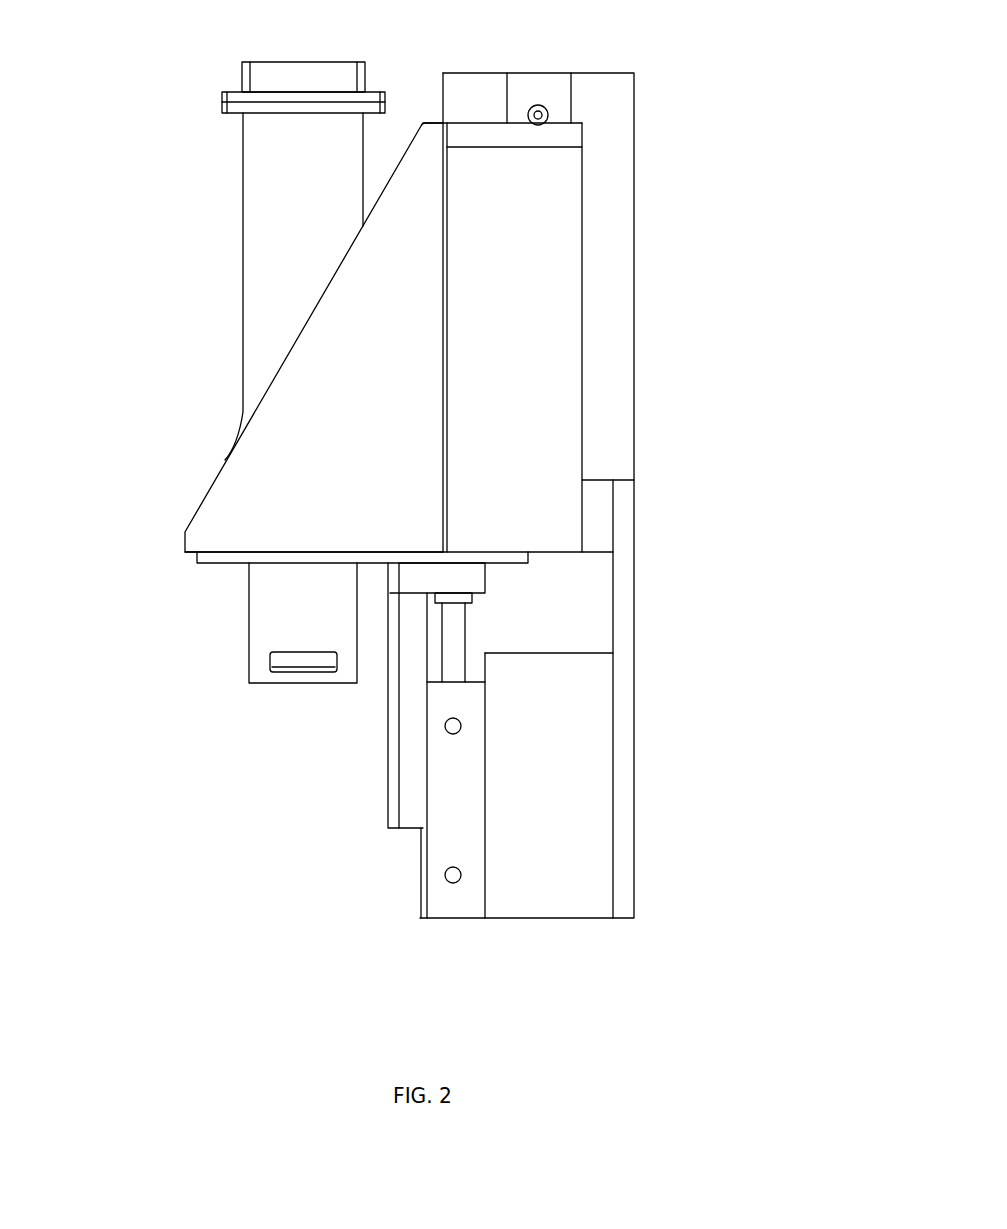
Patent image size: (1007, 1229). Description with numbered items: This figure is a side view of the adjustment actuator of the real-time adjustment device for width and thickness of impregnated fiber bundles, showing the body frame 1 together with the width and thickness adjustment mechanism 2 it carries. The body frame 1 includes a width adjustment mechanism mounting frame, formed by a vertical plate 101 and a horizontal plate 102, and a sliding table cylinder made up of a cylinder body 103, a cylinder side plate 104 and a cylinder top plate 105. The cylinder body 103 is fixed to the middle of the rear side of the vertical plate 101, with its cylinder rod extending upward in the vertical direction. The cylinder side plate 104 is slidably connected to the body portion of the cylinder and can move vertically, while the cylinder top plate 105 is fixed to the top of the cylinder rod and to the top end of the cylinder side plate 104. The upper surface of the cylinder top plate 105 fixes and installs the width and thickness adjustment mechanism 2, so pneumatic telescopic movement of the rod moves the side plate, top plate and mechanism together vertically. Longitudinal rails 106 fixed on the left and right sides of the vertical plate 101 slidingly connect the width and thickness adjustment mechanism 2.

The body frame 1 is at (684, 814).
The width and thickness adjustment mechanism 2 is at (178, 389).
The vertical plate 101 is at (630, 660).
The horizontal plate 102 is at (197, 560).
The cylinder body 103 is at (442, 912).
The cylinder side plate 104 is at (397, 795).
The cylinder top plate 105 is at (482, 578).
The longitudinal rails 106 is at (571, 99).